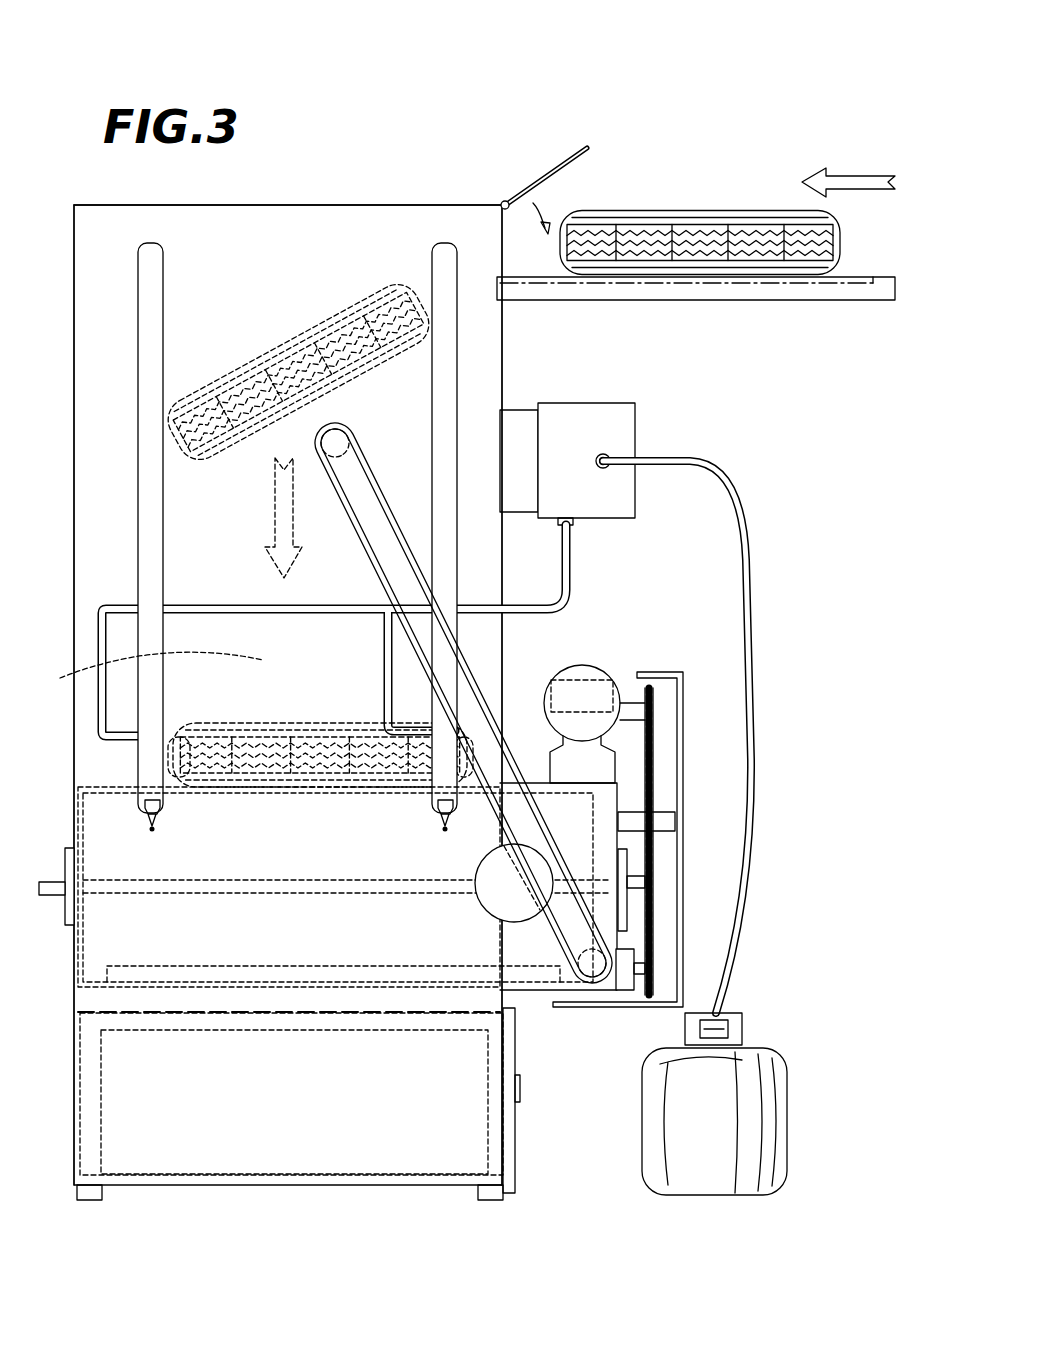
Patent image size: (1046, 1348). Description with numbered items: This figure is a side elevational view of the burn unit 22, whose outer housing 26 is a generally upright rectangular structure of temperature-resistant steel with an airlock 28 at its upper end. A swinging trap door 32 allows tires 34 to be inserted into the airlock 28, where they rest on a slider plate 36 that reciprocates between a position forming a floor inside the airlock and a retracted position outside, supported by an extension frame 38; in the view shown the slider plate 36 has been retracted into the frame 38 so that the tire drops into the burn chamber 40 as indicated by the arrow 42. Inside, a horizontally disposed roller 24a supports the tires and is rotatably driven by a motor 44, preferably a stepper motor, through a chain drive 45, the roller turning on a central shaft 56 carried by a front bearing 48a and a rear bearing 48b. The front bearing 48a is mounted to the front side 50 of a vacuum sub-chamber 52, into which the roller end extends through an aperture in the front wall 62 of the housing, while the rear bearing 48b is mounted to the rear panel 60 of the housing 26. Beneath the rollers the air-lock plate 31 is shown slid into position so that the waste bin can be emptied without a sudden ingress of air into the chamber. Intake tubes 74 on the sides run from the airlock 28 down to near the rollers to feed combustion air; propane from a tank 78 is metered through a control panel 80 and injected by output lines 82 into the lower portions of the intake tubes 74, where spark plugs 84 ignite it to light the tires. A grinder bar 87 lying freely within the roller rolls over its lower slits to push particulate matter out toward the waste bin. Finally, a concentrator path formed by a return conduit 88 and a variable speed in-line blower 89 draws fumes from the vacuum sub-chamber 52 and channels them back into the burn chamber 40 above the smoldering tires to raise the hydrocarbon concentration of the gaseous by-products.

The burn unit 22 is at (621, 72).
The roller 24a is at (124, 770).
The outer housing 26 is at (62, 538).
The airlock 28 is at (338, 205).
The air-lock plate 31 is at (150, 1015).
The swinging trap door 32 is at (577, 156).
The tire 34 is at (688, 210).
The slider plate 36 is at (780, 285).
The extension frame 38 is at (657, 300).
The burn chamber 40 is at (90, 670).
The arrow 42 is at (275, 500).
The motor 44 is at (553, 672).
The chain drive 45 is at (630, 686).
The front bearing 48a is at (626, 862).
The rear bearing 48b is at (64, 908).
The front side of vacuum sub-chamber 50 is at (616, 800).
The vacuum sub-chamber 52 is at (535, 1015).
The central shaft 56 is at (58, 882).
The rear panel 60 is at (73, 440).
The front wall 62 is at (502, 348).
The intake tube 74 is at (138, 360).
The tank 78 is at (790, 1100).
The control panel 80 is at (635, 422).
The output line 82 is at (572, 563).
The spark plug 84 is at (153, 831).
The grinder bar 87 is at (362, 960).
The return conduit 88 is at (368, 466).
The variable speed in-line blower 89 is at (478, 902).